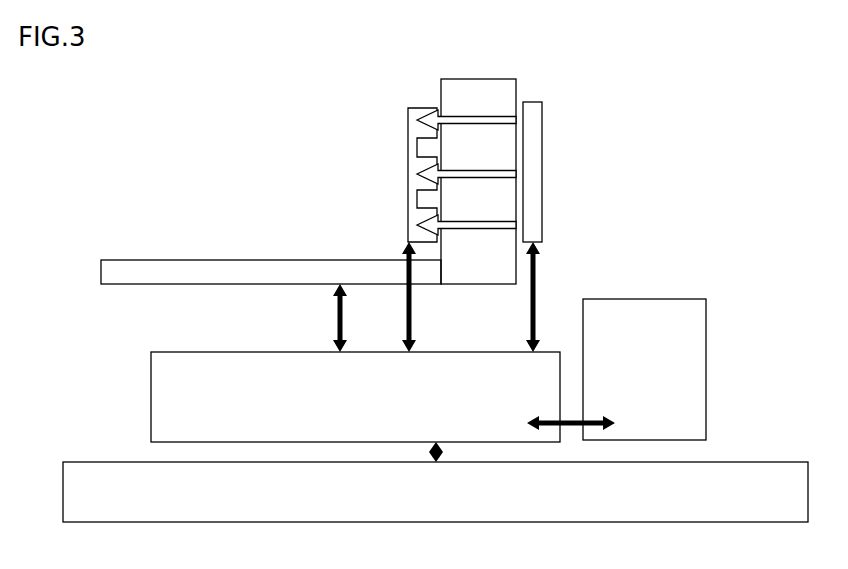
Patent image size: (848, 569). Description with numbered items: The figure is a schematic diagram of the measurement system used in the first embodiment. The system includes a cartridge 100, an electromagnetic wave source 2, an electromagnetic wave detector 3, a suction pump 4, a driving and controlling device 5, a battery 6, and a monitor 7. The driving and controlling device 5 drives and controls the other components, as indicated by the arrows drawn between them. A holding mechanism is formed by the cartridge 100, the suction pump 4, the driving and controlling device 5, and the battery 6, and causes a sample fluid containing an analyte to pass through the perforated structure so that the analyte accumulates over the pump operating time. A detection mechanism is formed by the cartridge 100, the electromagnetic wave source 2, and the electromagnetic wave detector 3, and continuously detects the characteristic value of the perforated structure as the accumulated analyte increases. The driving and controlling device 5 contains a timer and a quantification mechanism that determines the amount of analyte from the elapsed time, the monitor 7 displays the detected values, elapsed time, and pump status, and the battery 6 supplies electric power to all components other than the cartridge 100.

The cartridge 100 is at (481, 77).
The electromagnetic wave source 2 is at (532, 178).
The electromagnetic wave detector 3 is at (413, 177).
The suction pump 4 is at (277, 271).
The driving and controlling device 5 is at (166, 401).
The battery 6 is at (80, 493).
The monitor 7 is at (694, 373).